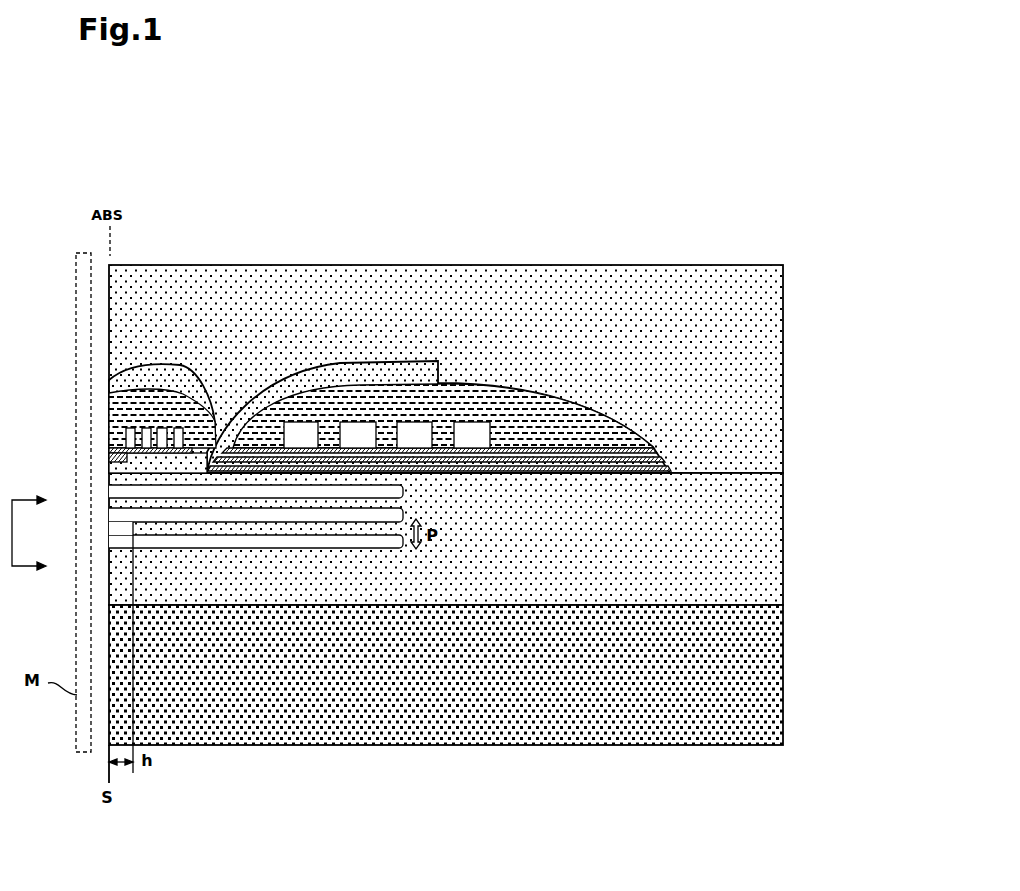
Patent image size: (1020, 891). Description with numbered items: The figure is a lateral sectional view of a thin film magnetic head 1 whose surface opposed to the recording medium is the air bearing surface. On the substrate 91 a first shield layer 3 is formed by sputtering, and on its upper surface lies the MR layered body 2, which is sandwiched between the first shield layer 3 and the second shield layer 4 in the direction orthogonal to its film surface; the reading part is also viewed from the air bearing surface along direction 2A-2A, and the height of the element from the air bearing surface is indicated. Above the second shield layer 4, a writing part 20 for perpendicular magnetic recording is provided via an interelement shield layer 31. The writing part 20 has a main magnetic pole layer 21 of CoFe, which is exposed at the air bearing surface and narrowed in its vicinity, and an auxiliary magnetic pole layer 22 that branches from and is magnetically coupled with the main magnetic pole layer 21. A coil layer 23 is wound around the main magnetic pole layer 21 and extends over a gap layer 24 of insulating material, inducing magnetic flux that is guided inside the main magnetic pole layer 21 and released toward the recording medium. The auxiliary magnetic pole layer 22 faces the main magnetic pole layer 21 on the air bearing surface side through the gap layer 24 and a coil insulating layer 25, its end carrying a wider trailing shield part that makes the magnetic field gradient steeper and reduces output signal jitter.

The thin film magnetic head 1 is at (372, 258).
The MR layered body 2 is at (133, 527).
The direction 2A- 2A is at (41, 533).
The first shield layer 3 is at (355, 549).
The second shield layer 4 is at (403, 513).
The writing part 20 is at (222, 370).
The main magnetic pole layer 21 is at (109, 466).
The auxiliary magnetic pole layer 22 is at (109, 388).
The coil layer 23 is at (175, 428).
The gap layer 24 is at (109, 450).
The coil insulating layer 25 is at (109, 408).
The interelement shield layer 31 is at (109, 492).
The substrate 91 is at (783, 638).